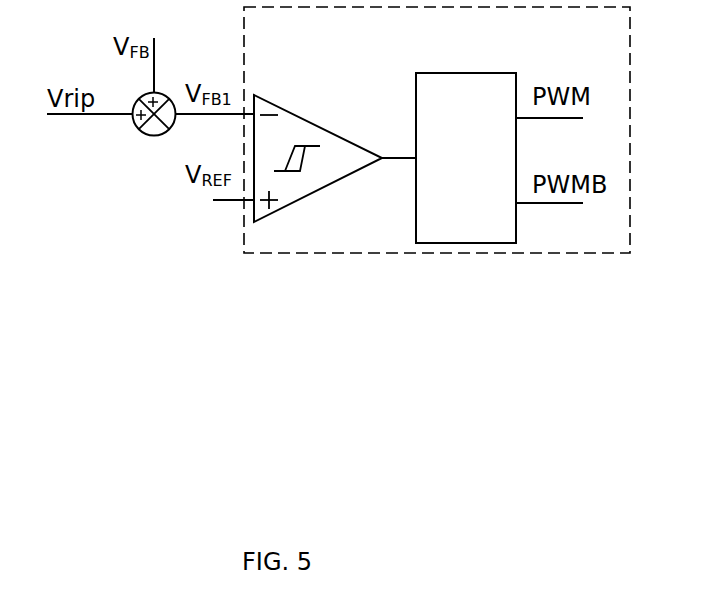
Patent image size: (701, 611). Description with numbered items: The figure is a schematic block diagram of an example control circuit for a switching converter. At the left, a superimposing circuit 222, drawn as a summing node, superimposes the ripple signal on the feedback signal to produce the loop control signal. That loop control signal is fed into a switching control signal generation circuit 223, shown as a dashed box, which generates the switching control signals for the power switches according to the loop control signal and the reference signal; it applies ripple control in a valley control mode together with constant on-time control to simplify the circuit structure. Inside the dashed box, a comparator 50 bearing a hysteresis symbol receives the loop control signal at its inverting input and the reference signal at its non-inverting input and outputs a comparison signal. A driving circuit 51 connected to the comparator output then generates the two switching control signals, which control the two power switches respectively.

The superimposing circuit 222 is at (132, 125).
The switching control signal generation circuit 223 is at (437, 130).
The comparator 50 is at (290, 110).
The driving circuit 51 is at (466, 158).